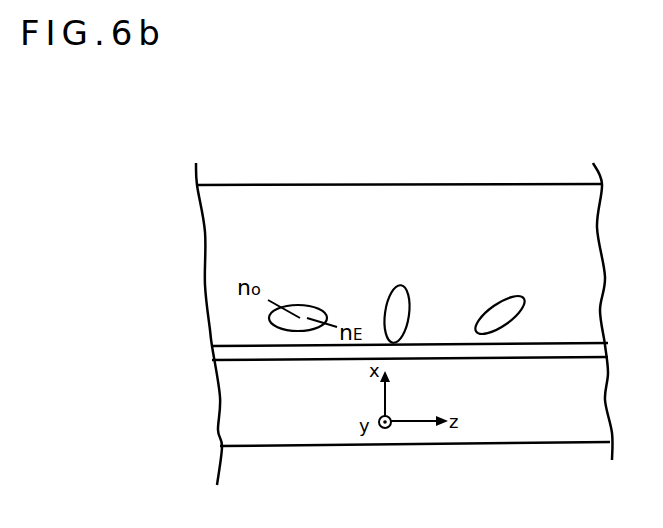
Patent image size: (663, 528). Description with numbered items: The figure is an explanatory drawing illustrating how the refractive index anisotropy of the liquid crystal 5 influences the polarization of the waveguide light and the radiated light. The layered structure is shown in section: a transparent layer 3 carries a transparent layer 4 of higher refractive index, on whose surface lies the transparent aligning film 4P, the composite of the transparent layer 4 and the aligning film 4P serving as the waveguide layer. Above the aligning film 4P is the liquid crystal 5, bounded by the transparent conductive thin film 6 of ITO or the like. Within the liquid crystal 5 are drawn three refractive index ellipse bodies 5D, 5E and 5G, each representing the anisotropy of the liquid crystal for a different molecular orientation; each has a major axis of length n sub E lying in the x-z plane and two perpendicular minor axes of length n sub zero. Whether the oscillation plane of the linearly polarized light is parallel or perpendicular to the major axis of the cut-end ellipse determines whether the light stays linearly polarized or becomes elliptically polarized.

The transparent conductive thin film 6 is at (215, 170).
The liquid crystal 5 is at (218, 232).
The transparent aligning film 4P is at (222, 354).
The transparent layer 4 is at (232, 400).
The transparent layer 3 is at (235, 467).
The refractive index ellipse body 5D is at (298, 313).
The refractive index ellipse body 5E is at (398, 285).
The refractive index ellipse body 5G is at (518, 295).